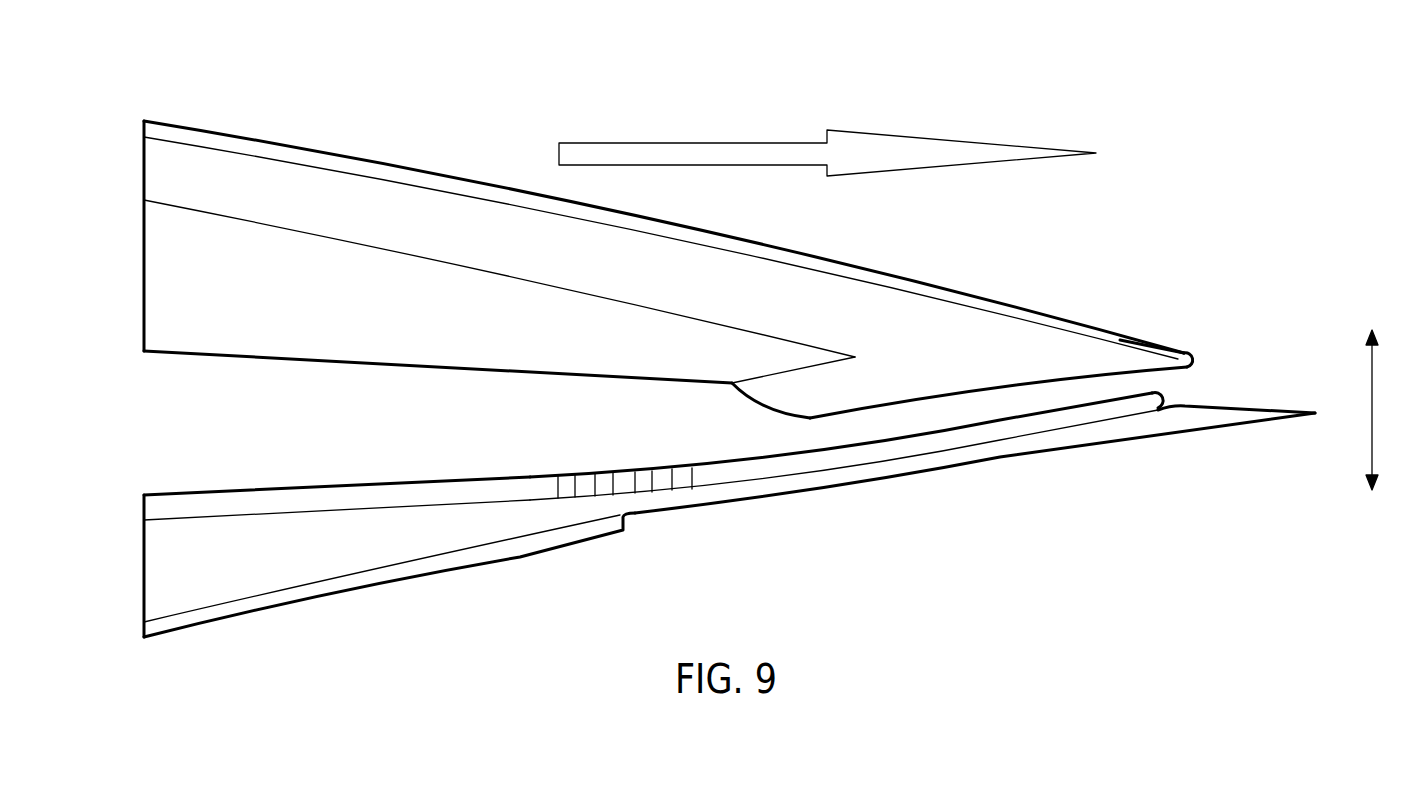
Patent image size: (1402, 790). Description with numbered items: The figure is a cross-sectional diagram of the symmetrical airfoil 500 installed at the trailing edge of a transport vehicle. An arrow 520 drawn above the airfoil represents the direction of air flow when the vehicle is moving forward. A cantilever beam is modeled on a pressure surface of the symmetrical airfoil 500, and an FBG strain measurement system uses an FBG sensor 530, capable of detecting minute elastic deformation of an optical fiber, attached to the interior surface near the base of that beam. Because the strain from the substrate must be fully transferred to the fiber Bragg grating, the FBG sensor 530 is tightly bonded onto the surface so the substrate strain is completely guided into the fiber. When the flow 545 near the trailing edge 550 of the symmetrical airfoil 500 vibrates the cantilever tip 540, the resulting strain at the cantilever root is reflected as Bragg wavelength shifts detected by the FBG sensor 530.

The symmetrical airfoil 500 is at (458, 688).
The arrow 520 is at (758, 142).
The FBG sensor 530 is at (627, 468).
The cantilever tip 540 is at (1056, 454).
The flow 545 is at (1371, 431).
The trailing edge 550 is at (1190, 348).